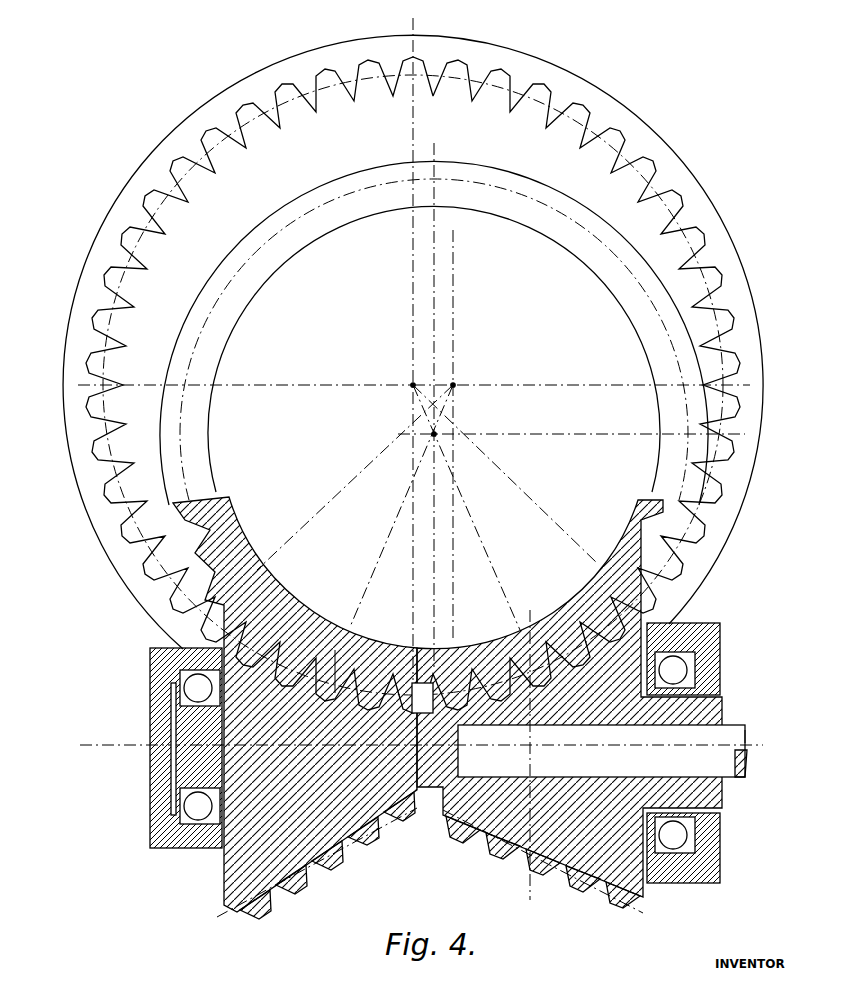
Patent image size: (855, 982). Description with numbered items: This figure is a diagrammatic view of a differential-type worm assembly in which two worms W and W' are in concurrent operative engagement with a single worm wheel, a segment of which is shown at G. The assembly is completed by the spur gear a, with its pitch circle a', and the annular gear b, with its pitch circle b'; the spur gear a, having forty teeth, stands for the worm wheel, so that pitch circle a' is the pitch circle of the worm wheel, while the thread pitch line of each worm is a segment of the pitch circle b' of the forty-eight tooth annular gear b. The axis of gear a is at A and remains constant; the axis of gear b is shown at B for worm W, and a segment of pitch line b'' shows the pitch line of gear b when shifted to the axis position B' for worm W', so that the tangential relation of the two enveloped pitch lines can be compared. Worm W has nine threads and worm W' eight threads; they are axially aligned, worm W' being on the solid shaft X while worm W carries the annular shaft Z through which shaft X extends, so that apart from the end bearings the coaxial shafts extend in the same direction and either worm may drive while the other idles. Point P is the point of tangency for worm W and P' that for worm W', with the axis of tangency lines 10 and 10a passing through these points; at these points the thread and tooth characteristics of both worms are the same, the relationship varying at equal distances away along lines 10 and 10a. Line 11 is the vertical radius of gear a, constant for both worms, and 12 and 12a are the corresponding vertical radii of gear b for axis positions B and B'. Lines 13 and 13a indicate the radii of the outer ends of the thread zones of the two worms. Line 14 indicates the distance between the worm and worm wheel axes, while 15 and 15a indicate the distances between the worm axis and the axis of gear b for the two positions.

The annular gear b is at (409, 342).
The pitch circle of annular gear b' is at (417, 385).
The segment of pitch line of shifted annular gear b'' is at (385, 385).
The spur gear a is at (434, 333).
The pitch circle of spur gear a' is at (434, 316).
The axis of gear a A is at (434, 434).
The axis of gear b B is at (481, 370).
The axis of gear b (shifted position) B' is at (377, 407).
The segment of worm wheel G is at (227, 511).
The point of tangency P is at (337, 631).
The point of tangency P' is at (567, 698).
The worm W is at (317, 855).
The worm W' is at (543, 863).
The shaft X is at (431, 742).
The annular shaft Z is at (705, 712).
The axis of tangency line 10 is at (357, 607).
The line of action axis 10a is at (490, 578).
The vertical radius of gear a 11 is at (433, 557).
The vertical radius of gear b 12 is at (455, 520).
The vertical radius of gear b (shifted) 12a is at (409, 553).
The radius of outer end of thread zone 13 is at (298, 527).
The radius of outer end of thread zone 13a is at (550, 517).
The distance indicating line 14 is at (572, 440).
The distance indicating line 15 is at (290, 385).
The distance indicating line 15a is at (560, 383).